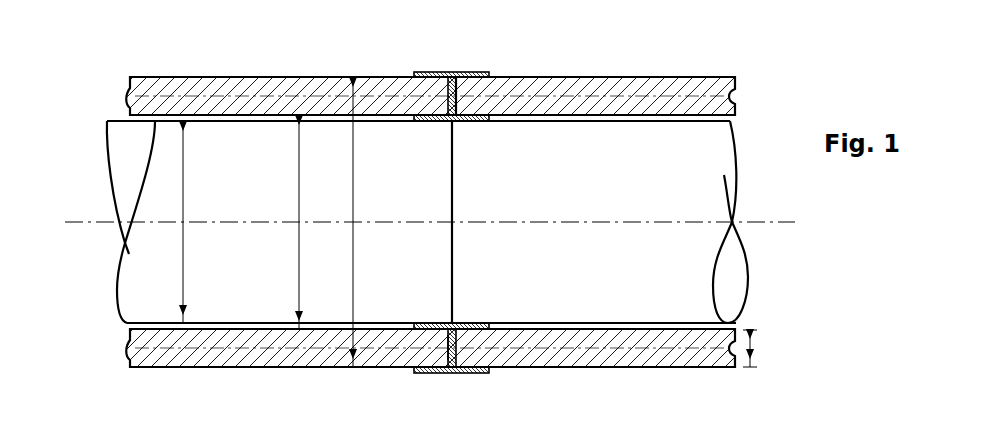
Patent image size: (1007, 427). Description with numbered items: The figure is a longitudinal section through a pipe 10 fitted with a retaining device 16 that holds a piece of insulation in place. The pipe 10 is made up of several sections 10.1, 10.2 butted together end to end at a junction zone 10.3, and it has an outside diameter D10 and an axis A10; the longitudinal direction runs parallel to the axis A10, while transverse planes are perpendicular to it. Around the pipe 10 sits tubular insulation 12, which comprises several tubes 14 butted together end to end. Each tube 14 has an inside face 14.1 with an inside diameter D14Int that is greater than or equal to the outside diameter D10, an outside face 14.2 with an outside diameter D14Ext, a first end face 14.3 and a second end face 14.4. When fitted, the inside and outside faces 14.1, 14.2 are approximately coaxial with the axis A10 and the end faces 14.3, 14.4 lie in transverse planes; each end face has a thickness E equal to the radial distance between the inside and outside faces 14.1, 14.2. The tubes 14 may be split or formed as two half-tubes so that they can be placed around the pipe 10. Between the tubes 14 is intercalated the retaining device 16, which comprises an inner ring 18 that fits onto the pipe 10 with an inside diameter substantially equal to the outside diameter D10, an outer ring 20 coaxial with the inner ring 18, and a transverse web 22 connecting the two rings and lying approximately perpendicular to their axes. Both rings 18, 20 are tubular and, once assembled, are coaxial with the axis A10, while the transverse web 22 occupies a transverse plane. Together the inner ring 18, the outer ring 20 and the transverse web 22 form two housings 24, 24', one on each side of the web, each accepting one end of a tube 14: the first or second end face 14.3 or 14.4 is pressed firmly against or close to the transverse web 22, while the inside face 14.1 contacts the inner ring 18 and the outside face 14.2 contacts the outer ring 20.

The pipe 10 is at (710, 132).
The section 10.1 is at (200, 137).
The section 10.2 is at (663, 315).
The junction zone 10.3 is at (458, 201).
The tubular insulation 12 is at (430, 186).
The tube 14 is at (263, 86).
The inside face 14.1 is at (240, 123).
The outside face 14.2 is at (303, 77).
The first end face 14.3 is at (441, 371).
The second end face 14.4 is at (457, 97).
The retaining device 16 is at (484, 213).
The inner ring 18 is at (478, 324).
The outer ring 20 is at (476, 373).
The transverse web 22 is at (450, 76).
The housing 24 is at (515, 330).
The housing 24' is at (407, 325).
The axis A10 is at (70, 222).
The outside diameter D10 is at (167, 222).
The inside diameter D14Int is at (284, 222).
The outside diameter D14Ext is at (337, 222).
The thickness E is at (755, 348).